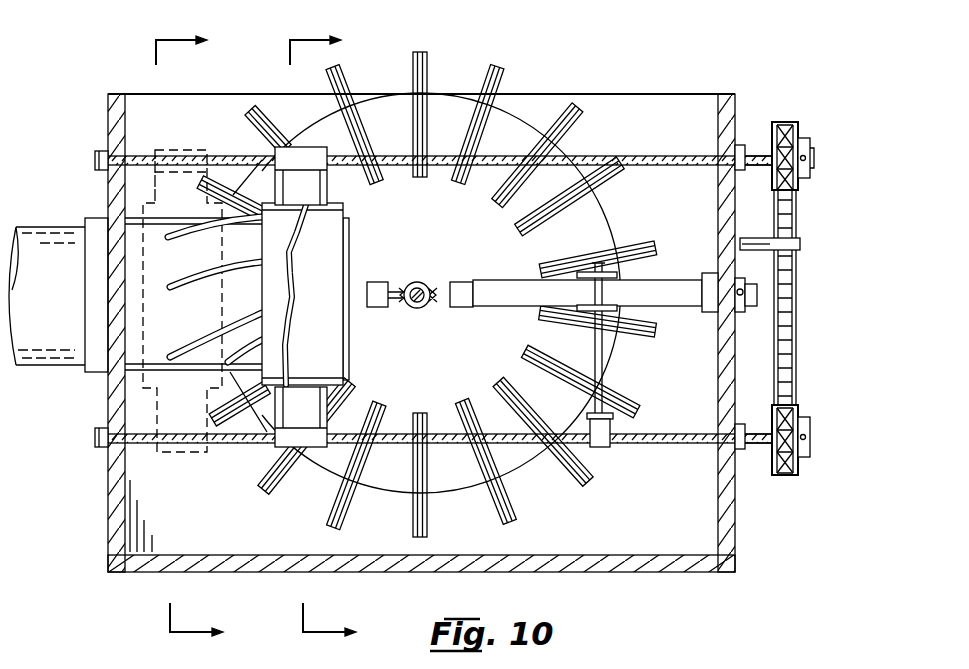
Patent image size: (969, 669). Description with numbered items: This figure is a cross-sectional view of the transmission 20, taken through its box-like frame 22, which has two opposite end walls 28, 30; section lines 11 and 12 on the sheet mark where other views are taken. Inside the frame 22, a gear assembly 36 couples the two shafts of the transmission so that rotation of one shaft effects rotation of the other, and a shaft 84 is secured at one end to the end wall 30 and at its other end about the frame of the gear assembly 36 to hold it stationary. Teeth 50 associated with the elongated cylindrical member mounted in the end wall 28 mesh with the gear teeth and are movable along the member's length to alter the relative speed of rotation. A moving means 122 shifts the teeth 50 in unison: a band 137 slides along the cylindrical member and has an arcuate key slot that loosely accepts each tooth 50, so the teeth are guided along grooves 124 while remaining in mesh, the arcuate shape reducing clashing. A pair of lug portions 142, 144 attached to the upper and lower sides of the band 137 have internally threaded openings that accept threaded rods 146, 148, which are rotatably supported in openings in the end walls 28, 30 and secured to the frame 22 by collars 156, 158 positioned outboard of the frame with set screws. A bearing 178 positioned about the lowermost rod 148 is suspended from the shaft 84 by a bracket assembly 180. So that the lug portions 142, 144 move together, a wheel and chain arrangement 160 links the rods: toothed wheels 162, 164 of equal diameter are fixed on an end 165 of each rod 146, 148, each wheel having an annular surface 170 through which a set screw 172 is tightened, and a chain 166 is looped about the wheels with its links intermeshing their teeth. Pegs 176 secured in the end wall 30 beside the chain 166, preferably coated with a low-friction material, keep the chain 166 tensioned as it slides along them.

The section line 11- 11 is at (323, 336).
The section line 12- 12 is at (189, 336).
The transmission 20 is at (551, 70).
The frame 22 is at (737, 97).
The end wall 28 is at (110, 507).
The end wall 30 is at (738, 547).
The gear assembly 36 is at (435, 282).
The teeth 50 is at (298, 258).
The shaft 84 is at (674, 279).
The moving means 122 is at (789, 489).
The grooves 124 is at (192, 338).
The band 137 is at (152, 376).
The lug portion 142 is at (277, 157).
The lug portion 144 is at (277, 447).
The threaded rod 146 is at (642, 156).
The threaded rod 148 is at (658, 443).
The collar 156 is at (97, 163).
The collar 158 is at (741, 147).
The wheel and chain arrangement 160 is at (801, 123).
The toothed wheel 162 is at (806, 174).
The toothed wheel 164 is at (806, 452).
The end 165 is at (756, 167).
The chain 166 is at (800, 330).
The annular surface 170 is at (803, 140).
The set screw 172 is at (806, 158).
The peg 176 is at (800, 244).
The bearing 178 is at (596, 448).
The bracket assembly 180 is at (604, 350).